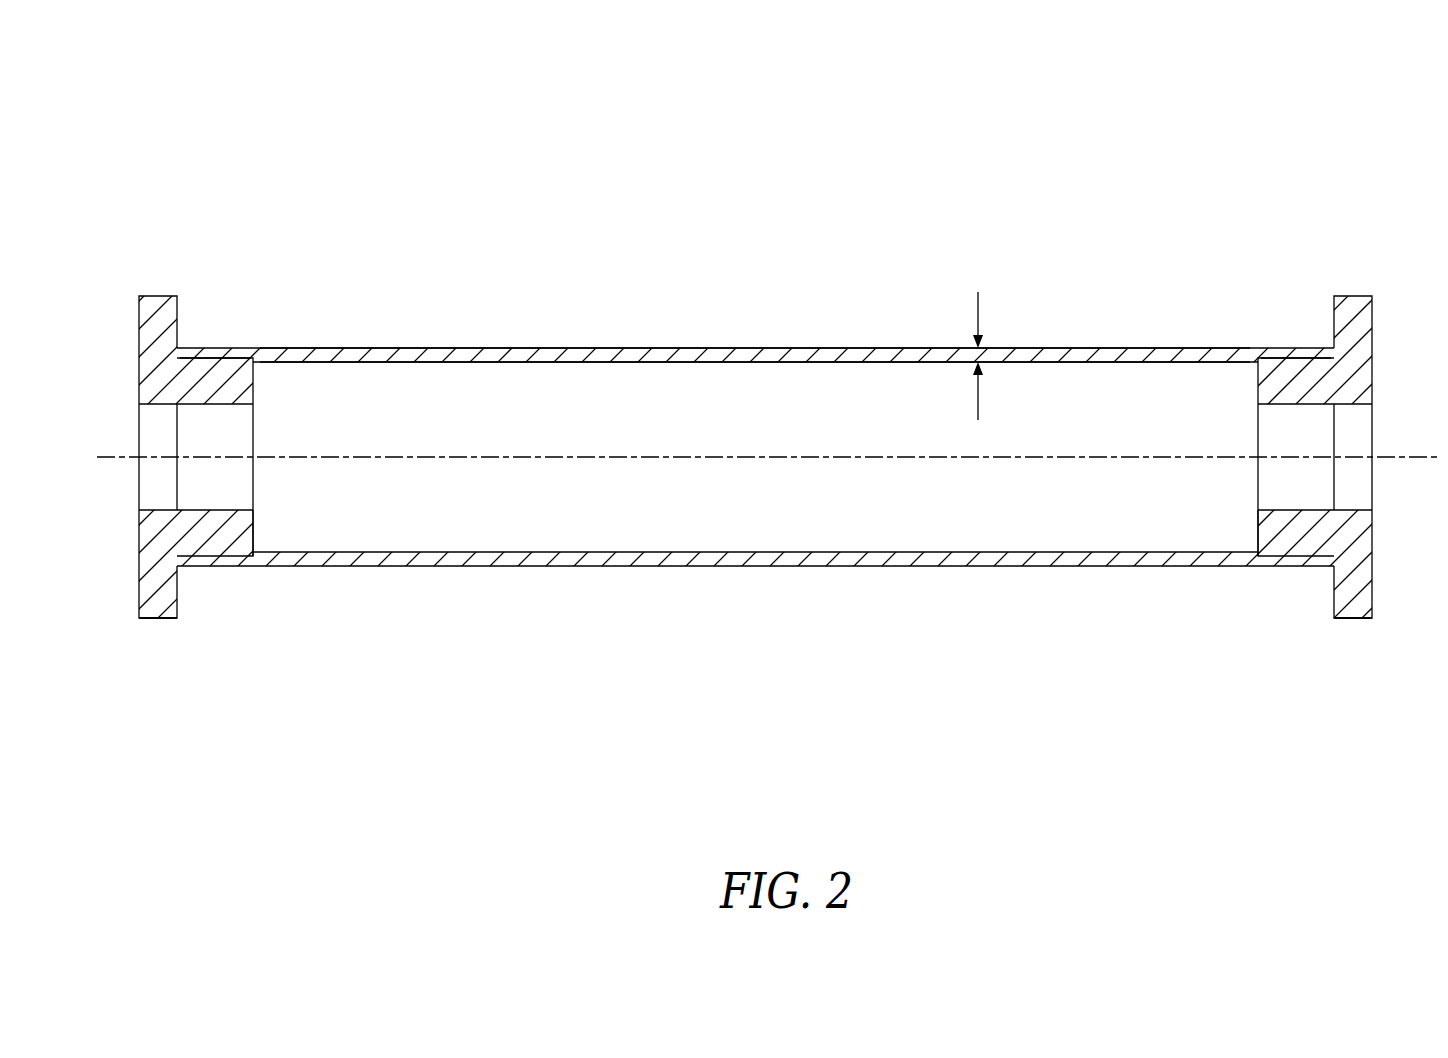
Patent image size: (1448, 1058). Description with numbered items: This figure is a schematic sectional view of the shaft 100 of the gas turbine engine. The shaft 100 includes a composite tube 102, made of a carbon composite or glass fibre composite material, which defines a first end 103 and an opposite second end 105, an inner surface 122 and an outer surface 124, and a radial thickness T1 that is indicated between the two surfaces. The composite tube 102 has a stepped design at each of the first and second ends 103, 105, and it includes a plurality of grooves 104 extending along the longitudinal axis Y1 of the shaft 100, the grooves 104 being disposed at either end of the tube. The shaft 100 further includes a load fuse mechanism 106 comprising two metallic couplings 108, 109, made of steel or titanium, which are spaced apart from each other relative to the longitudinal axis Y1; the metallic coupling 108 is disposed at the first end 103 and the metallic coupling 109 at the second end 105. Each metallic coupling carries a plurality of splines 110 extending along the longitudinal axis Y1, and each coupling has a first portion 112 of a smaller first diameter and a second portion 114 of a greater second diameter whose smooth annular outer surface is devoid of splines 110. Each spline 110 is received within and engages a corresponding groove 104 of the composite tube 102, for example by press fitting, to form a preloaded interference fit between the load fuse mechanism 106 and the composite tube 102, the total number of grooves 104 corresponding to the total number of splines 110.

The shaft 100 is at (1347, 87).
The composite tube 102 is at (759, 328).
The first end 103 is at (1334, 642).
The grooves 104 is at (194, 370).
The second end 105 is at (173, 648).
The load fuse mechanism 106 is at (122, 245).
The metallic coupling 108 is at (1353, 282).
The metallic coupling 109 is at (156, 280).
The splines 110 is at (220, 352).
The first portion 112 is at (253, 527).
The second portion 114 is at (157, 618).
The inner surface 122 is at (329, 368).
The outer surface 124 is at (277, 348).
The radial thickness T1 is at (978, 312).
The longitudinal axis Y1 is at (755, 457).